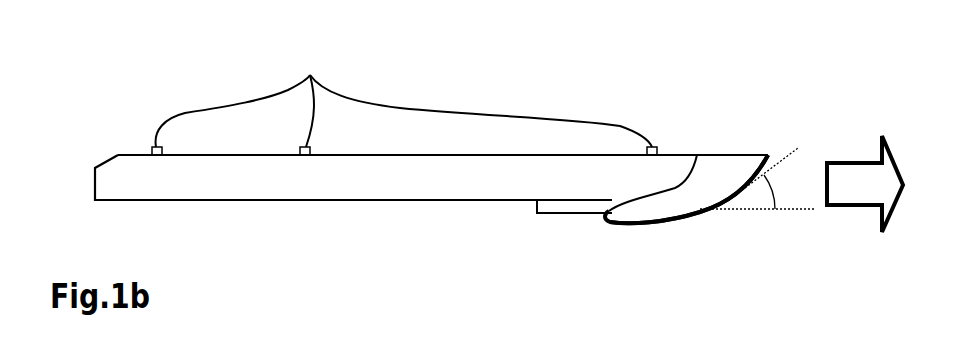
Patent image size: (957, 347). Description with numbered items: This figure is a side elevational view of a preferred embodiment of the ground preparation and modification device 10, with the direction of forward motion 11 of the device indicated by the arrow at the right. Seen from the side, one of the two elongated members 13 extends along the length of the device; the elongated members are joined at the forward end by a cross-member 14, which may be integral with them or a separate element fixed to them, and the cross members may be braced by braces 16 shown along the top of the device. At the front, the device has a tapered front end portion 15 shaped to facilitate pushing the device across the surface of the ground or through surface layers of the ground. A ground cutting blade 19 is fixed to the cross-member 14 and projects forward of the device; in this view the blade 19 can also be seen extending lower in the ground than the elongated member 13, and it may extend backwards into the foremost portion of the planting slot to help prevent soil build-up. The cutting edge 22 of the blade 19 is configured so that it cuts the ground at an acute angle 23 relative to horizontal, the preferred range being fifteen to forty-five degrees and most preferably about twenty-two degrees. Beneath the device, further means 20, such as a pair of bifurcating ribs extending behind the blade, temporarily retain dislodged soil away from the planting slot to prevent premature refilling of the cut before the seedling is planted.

The ground preparation and modification device 10 is at (208, 86).
The direction of forward motion 11 is at (843, 197).
The elongated member 13 is at (470, 167).
The cross-member 14 is at (668, 170).
The tapered front end portion 15 is at (697, 178).
The braces 16 is at (310, 75).
The ground cutting blade 19 is at (683, 197).
The means to improve soil conditions 20 is at (570, 203).
The cutting edge 22 is at (672, 222).
The acute angle 23 is at (757, 178).